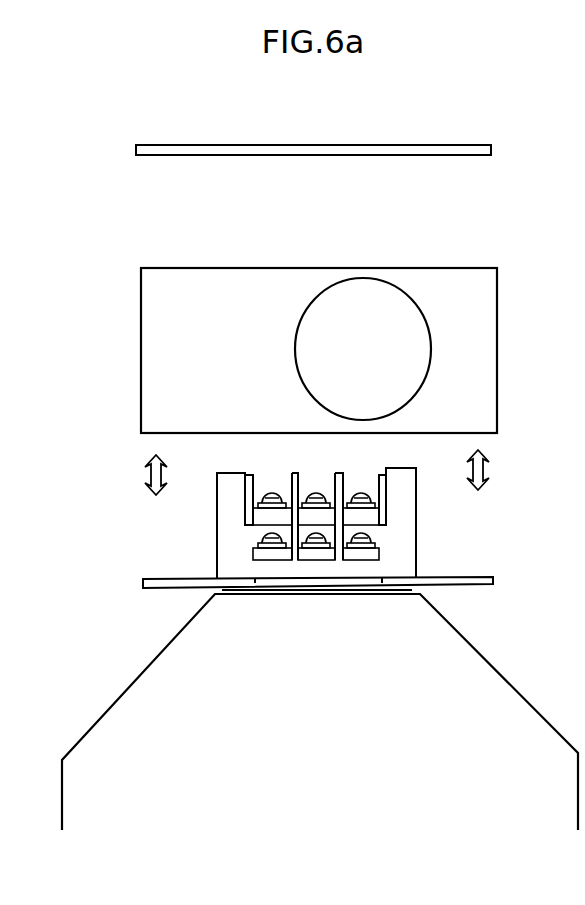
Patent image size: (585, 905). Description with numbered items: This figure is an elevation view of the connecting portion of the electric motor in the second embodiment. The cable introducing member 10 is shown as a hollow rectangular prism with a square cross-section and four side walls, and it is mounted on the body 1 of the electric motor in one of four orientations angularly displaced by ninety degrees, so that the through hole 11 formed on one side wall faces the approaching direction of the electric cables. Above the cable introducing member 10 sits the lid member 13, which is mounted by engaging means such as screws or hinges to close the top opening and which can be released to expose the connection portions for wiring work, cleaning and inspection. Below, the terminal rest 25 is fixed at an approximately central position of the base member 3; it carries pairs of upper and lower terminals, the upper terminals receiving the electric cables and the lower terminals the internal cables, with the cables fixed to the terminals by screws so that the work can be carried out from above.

The body 1 is at (487, 686).
The base member 3 is at (167, 578).
The cable introducing member 10 is at (497, 342).
The through hole 11 is at (362, 294).
The lid member 13 is at (400, 144).
The terminal rest 25 is at (398, 492).